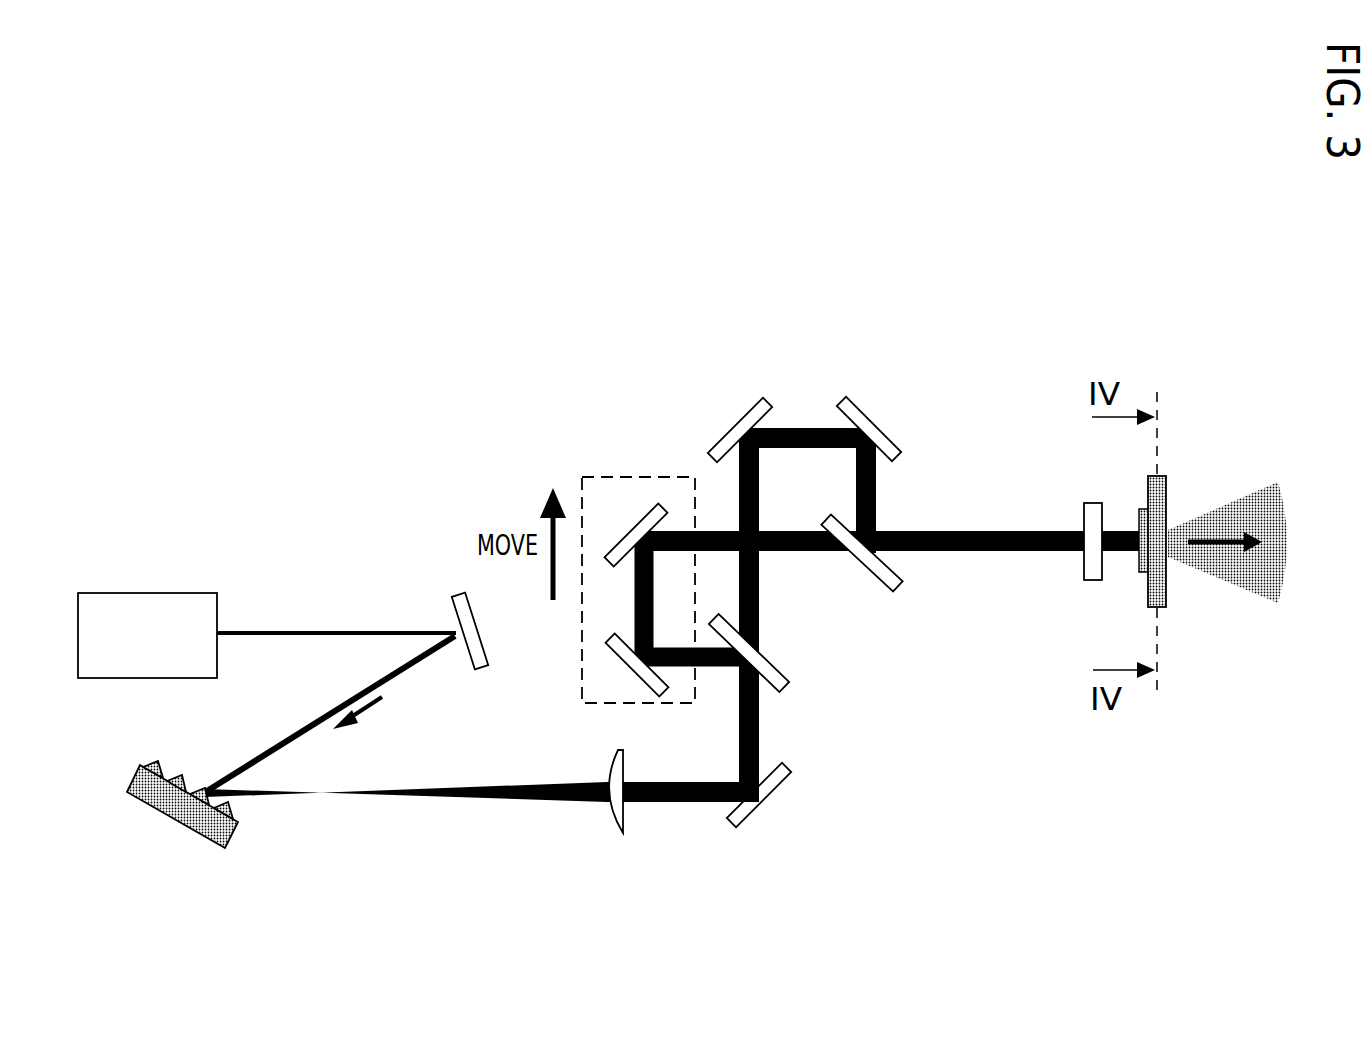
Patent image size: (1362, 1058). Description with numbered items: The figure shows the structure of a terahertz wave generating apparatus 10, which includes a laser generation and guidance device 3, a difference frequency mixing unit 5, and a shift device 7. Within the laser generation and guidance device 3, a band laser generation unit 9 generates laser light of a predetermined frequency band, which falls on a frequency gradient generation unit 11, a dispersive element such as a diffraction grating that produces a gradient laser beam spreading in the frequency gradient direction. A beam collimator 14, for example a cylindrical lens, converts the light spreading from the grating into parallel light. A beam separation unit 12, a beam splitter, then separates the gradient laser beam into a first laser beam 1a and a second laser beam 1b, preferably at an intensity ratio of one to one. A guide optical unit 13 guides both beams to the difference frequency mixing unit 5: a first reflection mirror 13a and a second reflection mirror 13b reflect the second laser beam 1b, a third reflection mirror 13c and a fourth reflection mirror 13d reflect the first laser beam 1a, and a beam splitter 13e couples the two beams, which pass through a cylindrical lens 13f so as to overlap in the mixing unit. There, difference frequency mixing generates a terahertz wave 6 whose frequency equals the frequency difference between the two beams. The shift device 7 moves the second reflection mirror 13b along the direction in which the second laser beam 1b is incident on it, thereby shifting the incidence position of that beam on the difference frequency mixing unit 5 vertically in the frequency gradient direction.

The first laser beam 1a is at (797, 427).
The second laser beam 1b is at (685, 532).
The laser generation and guidance device 3 is at (422, 358).
The difference frequency mixing unit 5 is at (1150, 590).
The terahertz wave 6 is at (1242, 505).
The shift device 7 is at (583, 630).
The band laser generation unit 9 is at (165, 650).
The terahertz wave generating apparatus 10 is at (266, 370).
The frequency gradient generation unit 11 is at (185, 815).
The beam separation unit 12 is at (790, 685).
The guide optical unit 13 is at (572, 357).
The first reflection mirror 13a is at (633, 663).
The second reflection mirror 13b is at (632, 537).
The third reflection mirror 13c is at (752, 417).
The fourth reflection mirror 13d is at (872, 422).
The beam splitter 13e is at (898, 583).
The cylindrical lens 13f is at (1092, 512).
The beam collimator 14 is at (612, 810).